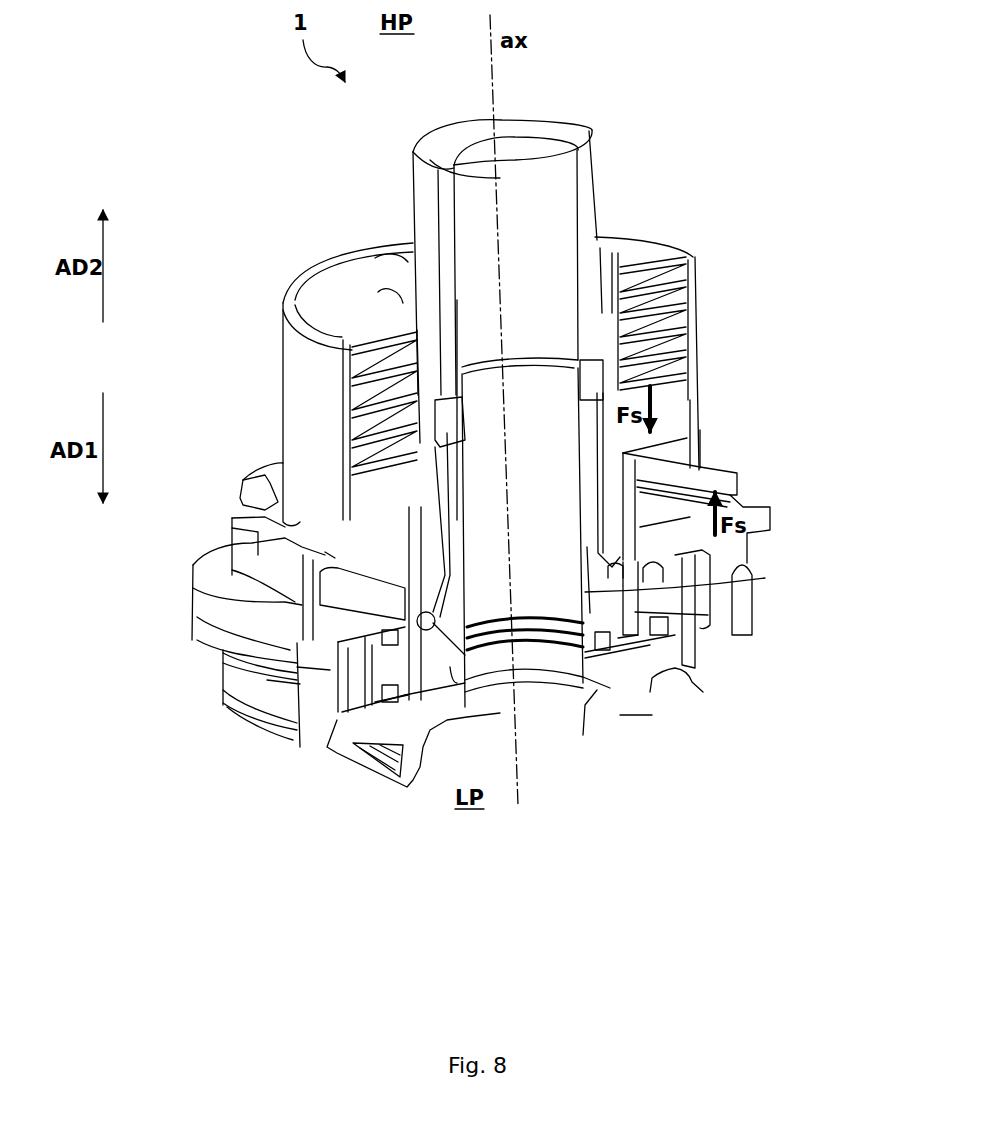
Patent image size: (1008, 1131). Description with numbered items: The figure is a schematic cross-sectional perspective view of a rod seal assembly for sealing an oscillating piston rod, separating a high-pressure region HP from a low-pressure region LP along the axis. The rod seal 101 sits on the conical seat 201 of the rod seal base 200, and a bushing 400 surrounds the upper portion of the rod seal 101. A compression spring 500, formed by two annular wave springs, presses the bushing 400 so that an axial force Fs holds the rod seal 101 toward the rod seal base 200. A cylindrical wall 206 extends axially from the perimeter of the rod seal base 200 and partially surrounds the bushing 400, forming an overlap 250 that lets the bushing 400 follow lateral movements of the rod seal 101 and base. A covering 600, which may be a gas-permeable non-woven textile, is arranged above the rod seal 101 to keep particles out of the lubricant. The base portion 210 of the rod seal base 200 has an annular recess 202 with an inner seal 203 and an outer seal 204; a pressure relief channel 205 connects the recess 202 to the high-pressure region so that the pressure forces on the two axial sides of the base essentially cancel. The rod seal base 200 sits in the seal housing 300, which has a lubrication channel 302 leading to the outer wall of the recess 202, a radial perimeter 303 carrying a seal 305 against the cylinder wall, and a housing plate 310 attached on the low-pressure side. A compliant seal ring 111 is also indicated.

The rod seal 101 is at (453, 487).
The compliant seal ring 111 is at (653, 565).
The rod seal base 200 is at (400, 650).
The conical seat 201 is at (703, 588).
The recess 202 is at (620, 643).
The first seal 203 is at (602, 648).
The second seal 204 is at (662, 630).
The pressure relief channel 205 is at (685, 642).
The cylindrical wall 206 is at (345, 497).
The base portion 210 is at (414, 655).
The overlap 250 is at (395, 562).
The seal housing 300 is at (160, 603).
The channel 302 is at (633, 612).
The radial perimeter 303 is at (297, 667).
The seal 305 is at (267, 680).
The housing plate 310 is at (395, 785).
The bushing 400 is at (427, 290).
The spring 500 is at (600, 290).
The covering 600 is at (590, 373).